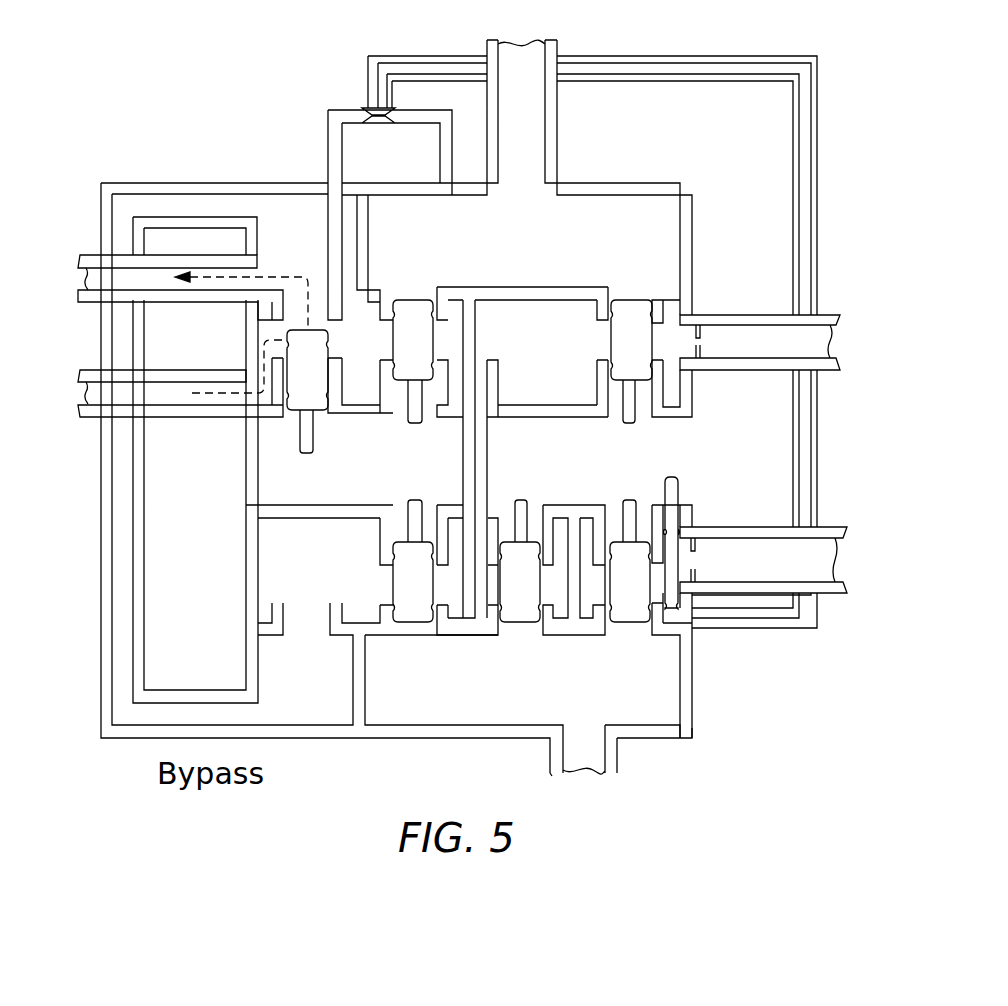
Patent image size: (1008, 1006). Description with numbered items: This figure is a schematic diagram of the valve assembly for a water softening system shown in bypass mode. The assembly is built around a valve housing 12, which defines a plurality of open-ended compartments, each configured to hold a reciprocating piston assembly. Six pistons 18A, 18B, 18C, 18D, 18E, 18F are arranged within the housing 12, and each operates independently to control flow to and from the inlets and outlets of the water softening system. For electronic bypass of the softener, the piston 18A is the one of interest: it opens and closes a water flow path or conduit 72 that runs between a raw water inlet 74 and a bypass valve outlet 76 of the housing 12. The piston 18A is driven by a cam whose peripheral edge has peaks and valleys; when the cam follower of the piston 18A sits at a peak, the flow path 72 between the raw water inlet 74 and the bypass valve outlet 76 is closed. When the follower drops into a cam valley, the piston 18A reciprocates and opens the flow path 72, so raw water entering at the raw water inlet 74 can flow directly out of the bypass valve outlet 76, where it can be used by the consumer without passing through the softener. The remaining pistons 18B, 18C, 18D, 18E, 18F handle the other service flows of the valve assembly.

The valve housing 12 is at (828, 138).
The flow path 72 is at (295, 300).
The raw water inlet 74 is at (82, 396).
The bypass valve outlet 76 is at (82, 279).
The piston 18A is at (307, 391).
The piston 18B is at (413, 561).
The piston 18C is at (413, 361).
The piston 18D is at (520, 561).
The piston 18E is at (631, 361).
The piston 18F is at (630, 561).